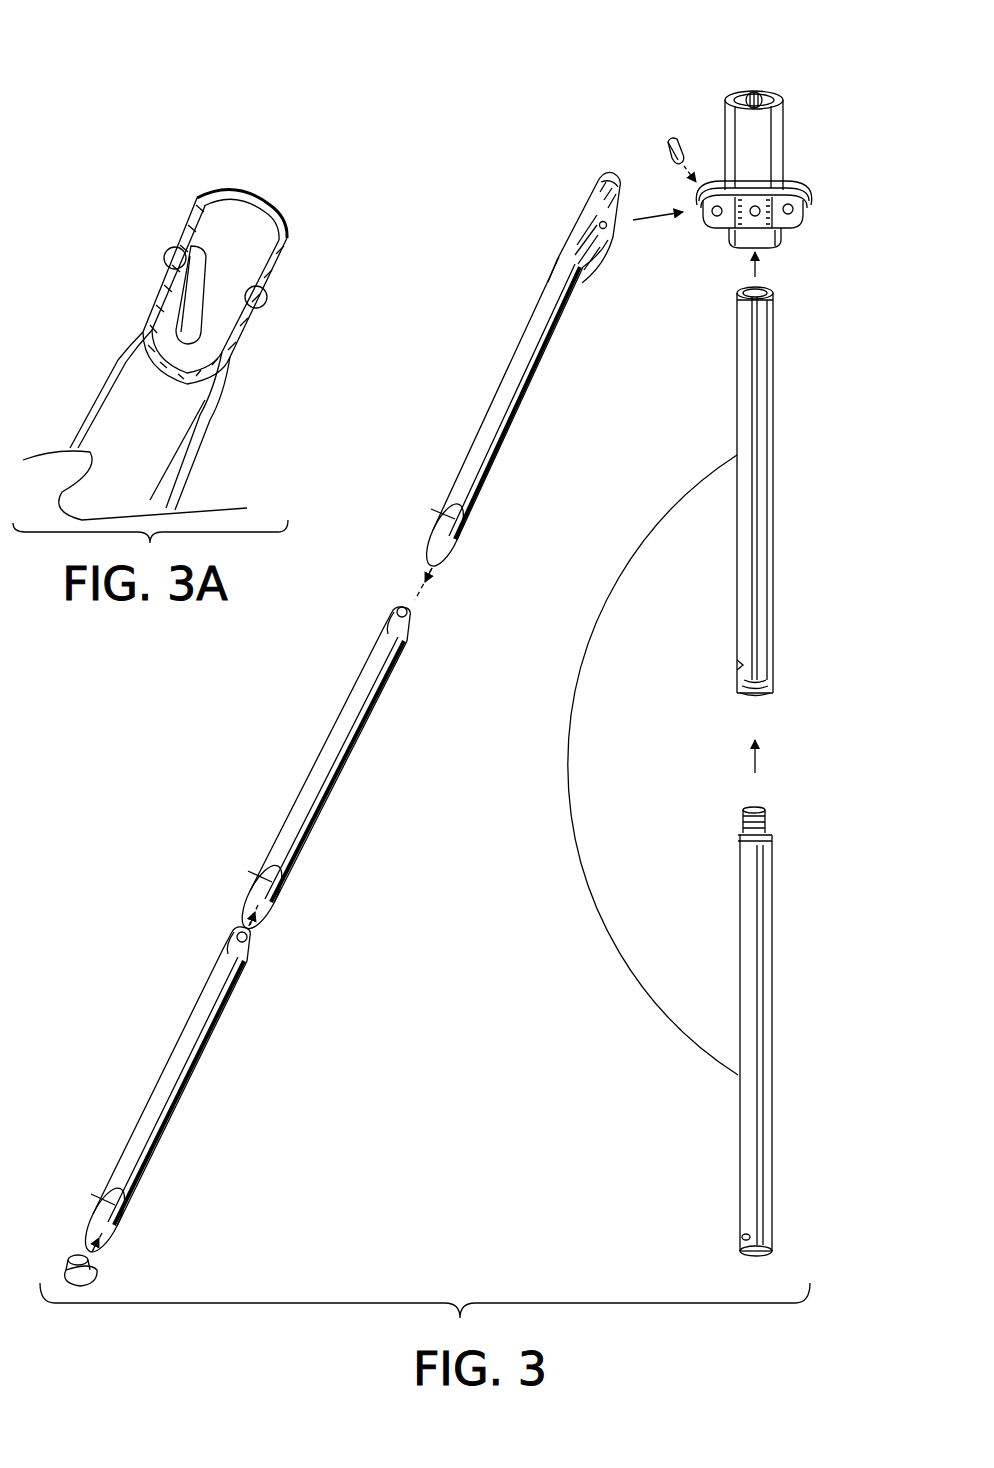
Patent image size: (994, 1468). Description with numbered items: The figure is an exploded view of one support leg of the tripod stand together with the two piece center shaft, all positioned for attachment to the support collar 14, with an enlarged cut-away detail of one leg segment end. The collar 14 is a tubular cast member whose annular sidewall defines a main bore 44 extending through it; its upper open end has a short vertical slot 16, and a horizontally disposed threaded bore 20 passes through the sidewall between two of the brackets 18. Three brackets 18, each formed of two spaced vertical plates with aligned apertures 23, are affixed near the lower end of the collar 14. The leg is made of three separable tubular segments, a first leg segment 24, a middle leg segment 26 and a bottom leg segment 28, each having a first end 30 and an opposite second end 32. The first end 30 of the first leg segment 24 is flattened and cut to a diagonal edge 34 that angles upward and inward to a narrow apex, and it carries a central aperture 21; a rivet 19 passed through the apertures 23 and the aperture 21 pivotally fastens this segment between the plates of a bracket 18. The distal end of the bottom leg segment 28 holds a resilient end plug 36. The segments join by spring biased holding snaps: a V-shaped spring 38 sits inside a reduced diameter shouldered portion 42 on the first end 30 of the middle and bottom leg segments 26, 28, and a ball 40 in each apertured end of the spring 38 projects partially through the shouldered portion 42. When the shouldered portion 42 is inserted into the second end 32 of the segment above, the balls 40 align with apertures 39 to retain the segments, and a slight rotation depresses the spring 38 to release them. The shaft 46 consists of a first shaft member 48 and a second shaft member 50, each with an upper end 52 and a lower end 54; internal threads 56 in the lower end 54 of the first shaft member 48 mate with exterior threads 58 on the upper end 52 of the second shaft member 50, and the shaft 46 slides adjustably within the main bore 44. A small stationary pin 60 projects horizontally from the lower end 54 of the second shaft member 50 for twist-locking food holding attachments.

In FIG. 3, the support collar 14 is at (780, 137).
In FIG. 3, the vertical slot 16 is at (765, 97).
In FIG. 3, the bracket 18 is at (712, 177).
In FIG. 3, the rivet 19 is at (674, 136).
In FIG. 3, the threaded bore 20 is at (772, 238).
In FIG. 3, the central aperture 21 is at (599, 227).
In FIG. 3, the aperture 23 is at (718, 216).
In FIG. 3, the first leg segment 24 is at (515, 412).
In FIG. 3A, the middle leg segment 26 is at (88, 390).
In FIG. 3, the middle leg segment 26 is at (323, 810).
In FIG. 3, the bottom leg segment 28 is at (185, 1108).
In FIG. 3A, the first end 30 is at (225, 395).
In FIG. 3, the first end 30 is at (582, 212).
In FIG. 3, the second end 32 is at (438, 522).
In FIG. 3, the diagonal edge 34 is at (625, 185).
In FIG. 3, the end plug 36 is at (97, 1283).
In FIG. 3A, the V-shaped spring 38 is at (167, 278).
In FIG. 3, the aperture 39 is at (457, 534).
In FIG. 3A, the ball 40 is at (172, 248).
In FIG. 3, the ball 40 is at (410, 618).
In FIG. 3A, the reduced diameter shouldered portion 42 is at (245, 200).
In FIG. 3, the reduced diameter shouldered portion 42 is at (397, 612).
In FIG. 3, the main bore 44 is at (751, 97).
In FIG. 3, the shaft 46 is at (640, 765).
In FIG. 3, the first shaft member 48 is at (773, 507).
In FIG. 3, the second shaft member 50 is at (773, 1012).
In FIG. 3, the upper end 52 is at (737, 300).
In FIG. 3, the lower end 54 is at (737, 660).
In FIG. 3, the internal threads 56 is at (768, 690).
In FIG. 3, the exterior threads 58 is at (742, 815).
In FIG. 3, the pin 60 is at (742, 1232).